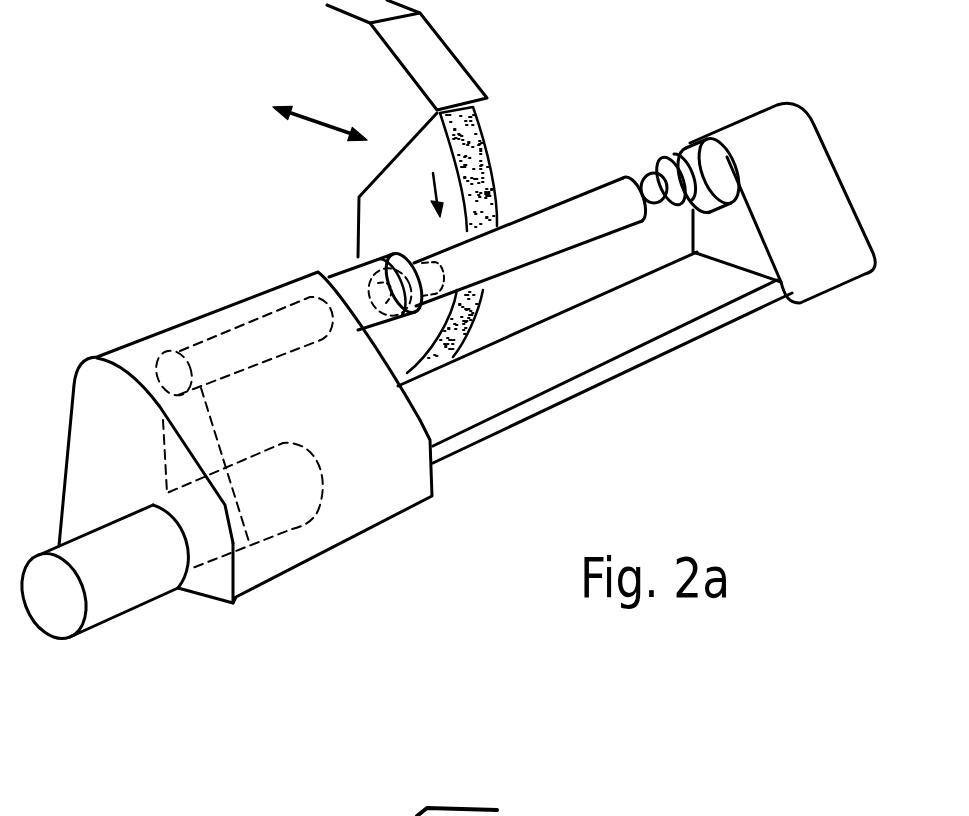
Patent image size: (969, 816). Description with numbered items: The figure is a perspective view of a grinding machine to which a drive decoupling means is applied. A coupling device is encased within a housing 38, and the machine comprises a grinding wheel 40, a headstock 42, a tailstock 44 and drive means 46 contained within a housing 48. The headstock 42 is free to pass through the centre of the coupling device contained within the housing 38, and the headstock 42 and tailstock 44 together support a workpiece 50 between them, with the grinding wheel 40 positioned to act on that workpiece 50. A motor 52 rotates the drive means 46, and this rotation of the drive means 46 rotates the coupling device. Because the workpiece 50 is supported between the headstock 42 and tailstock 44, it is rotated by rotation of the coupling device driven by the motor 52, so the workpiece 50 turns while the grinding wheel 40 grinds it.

The housing 38 is at (360, 257).
The grinding wheel 40 is at (478, 178).
The headstock 42 is at (400, 380).
The tailstock 44 is at (710, 181).
The drive means 46 is at (268, 348).
The housing 48 is at (299, 556).
The workpiece 50 is at (557, 233).
The motor 52 is at (122, 590).